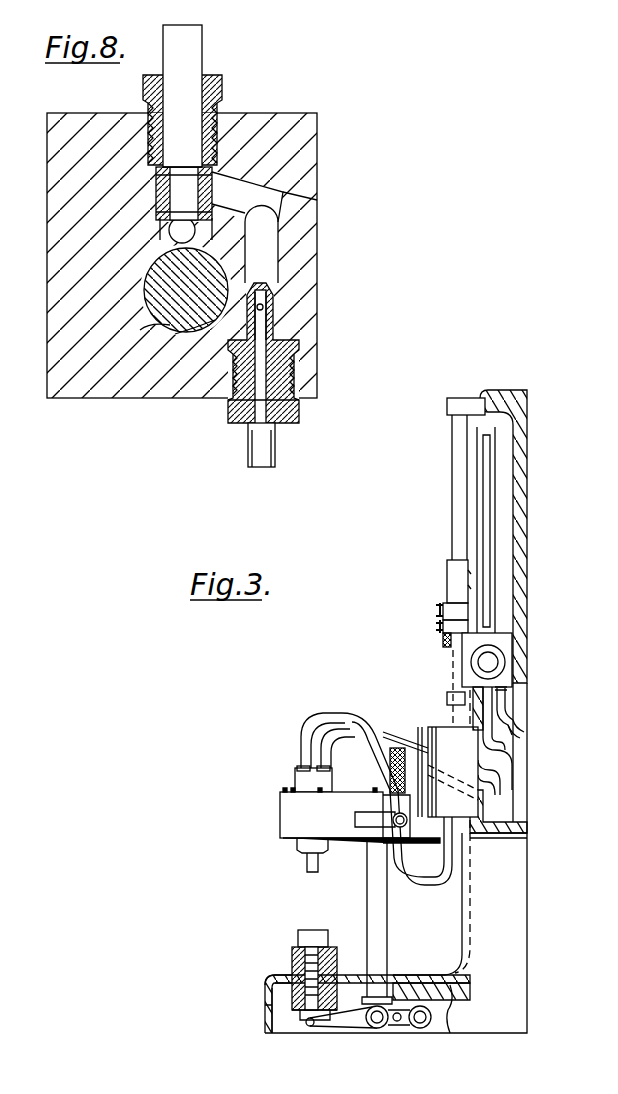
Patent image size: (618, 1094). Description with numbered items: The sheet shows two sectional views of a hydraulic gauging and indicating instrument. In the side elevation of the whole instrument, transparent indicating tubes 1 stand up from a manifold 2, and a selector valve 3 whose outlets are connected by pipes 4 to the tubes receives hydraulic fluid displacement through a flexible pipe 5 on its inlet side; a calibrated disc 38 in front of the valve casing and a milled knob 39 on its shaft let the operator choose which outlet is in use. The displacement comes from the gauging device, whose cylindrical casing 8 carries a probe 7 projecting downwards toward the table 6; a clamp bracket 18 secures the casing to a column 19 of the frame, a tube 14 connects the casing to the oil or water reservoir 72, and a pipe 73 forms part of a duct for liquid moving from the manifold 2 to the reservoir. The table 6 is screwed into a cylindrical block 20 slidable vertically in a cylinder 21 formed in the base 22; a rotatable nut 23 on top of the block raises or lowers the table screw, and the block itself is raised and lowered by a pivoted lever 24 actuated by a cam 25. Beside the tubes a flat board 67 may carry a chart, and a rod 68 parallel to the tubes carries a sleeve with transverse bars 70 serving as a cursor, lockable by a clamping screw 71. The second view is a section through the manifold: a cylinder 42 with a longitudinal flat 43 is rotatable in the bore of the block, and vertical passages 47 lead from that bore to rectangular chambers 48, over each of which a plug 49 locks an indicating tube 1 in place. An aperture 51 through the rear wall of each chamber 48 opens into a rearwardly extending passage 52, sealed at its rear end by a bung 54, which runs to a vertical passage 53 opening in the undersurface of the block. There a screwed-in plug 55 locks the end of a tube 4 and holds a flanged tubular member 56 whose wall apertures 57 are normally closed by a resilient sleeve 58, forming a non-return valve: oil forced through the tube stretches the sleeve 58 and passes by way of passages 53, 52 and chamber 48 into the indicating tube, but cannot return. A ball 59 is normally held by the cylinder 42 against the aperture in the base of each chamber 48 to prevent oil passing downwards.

In FIG. 8, the indicating tubes 1 is at (190, 55).
In FIG. 3, the indicating tubes 1 is at (487, 490).
In FIG. 3, the manifold 2 is at (512, 672).
In FIG. 3, the selector valve 3 is at (445, 735).
In FIG. 8, the pipes 4 is at (246, 452).
In FIG. 3, the pipes 4 is at (488, 790).
In FIG. 3, the flexible pipe 5 is at (430, 880).
In FIG. 3, the table 6 is at (300, 935).
In FIG. 3, the probe 7 is at (305, 862).
In FIG. 3, the cylindrical casing 8 is at (280, 805).
In FIG. 3, the tube 14 is at (325, 740).
In FIG. 3, the clamp bracket 18 is at (403, 838).
In FIG. 3, the column 19 is at (367, 882).
In FIG. 3, the cylindrical block 20 is at (305, 1005).
In FIG. 3, the cylinder 21 is at (280, 988).
In FIG. 3, the base 22 is at (266, 984).
In FIG. 3, the rotatable nut 23 is at (335, 950).
In FIG. 3, the pivoted lever 24 is at (356, 1022).
In FIG. 3, the cam 25 is at (405, 1010).
In FIG. 3, the disc 38 is at (420, 735).
In FIG. 3, the milled knob 39 is at (396, 750).
In FIG. 8, the cylinder 42 is at (165, 290).
In FIG. 8, the flat 43 is at (170, 335).
In FIG. 8, the vertical passages 47 is at (170, 240).
In FIG. 8, the rectangular chamber 48 is at (160, 185).
In FIG. 8, the plug 49 is at (148, 86).
In FIG. 8, the aperture 51 is at (212, 175).
In FIG. 8, the rearwardly extending passage 52 is at (270, 195).
In FIG. 8, the vertical passage 53 is at (270, 255).
In FIG. 8, the bung 54 is at (305, 210).
In FIG. 8, the screwed-in plug 55 is at (228, 418).
In FIG. 8, the flanged tubular member 56 is at (290, 342).
In FIG. 8, the apertures 57 is at (265, 307).
In FIG. 8, the sleeve 58 is at (272, 297).
In FIG. 8, the ball 59 is at (175, 228).
In FIG. 3, the flat board 67 is at (450, 577).
In FIG. 3, the rod 68 is at (455, 499).
In FIG. 3, the transverse bars 70 is at (440, 610).
In FIG. 3, the clamping screw 71 is at (436, 626).
In FIG. 3, the reservoir 72 is at (516, 700).
In FIG. 3, the pipe 73 is at (520, 722).